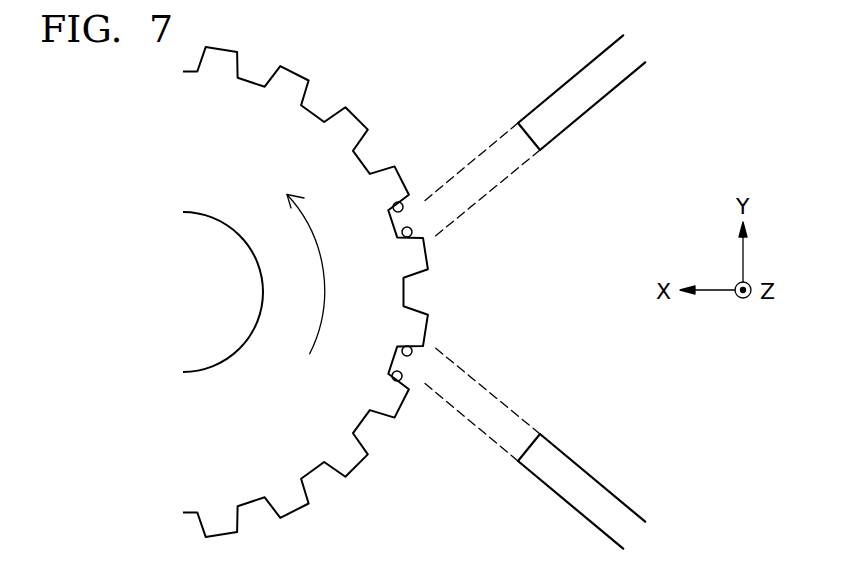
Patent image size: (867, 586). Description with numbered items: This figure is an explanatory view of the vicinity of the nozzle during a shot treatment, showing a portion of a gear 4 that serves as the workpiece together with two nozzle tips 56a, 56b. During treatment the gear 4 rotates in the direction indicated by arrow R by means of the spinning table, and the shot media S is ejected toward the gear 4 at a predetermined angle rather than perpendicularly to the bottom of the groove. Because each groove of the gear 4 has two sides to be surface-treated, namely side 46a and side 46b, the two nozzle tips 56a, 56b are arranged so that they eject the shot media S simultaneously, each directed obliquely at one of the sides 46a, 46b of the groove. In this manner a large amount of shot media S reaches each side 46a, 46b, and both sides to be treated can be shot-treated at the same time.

The gear 4 is at (224, 442).
The side 46a is at (407, 241).
The side 46b is at (396, 205).
The nozzle tip 56a is at (573, 95).
The nozzle tip 56b is at (572, 487).
The shot media S is at (472, 167).
The arrow indicating rotation direction R is at (306, 274).